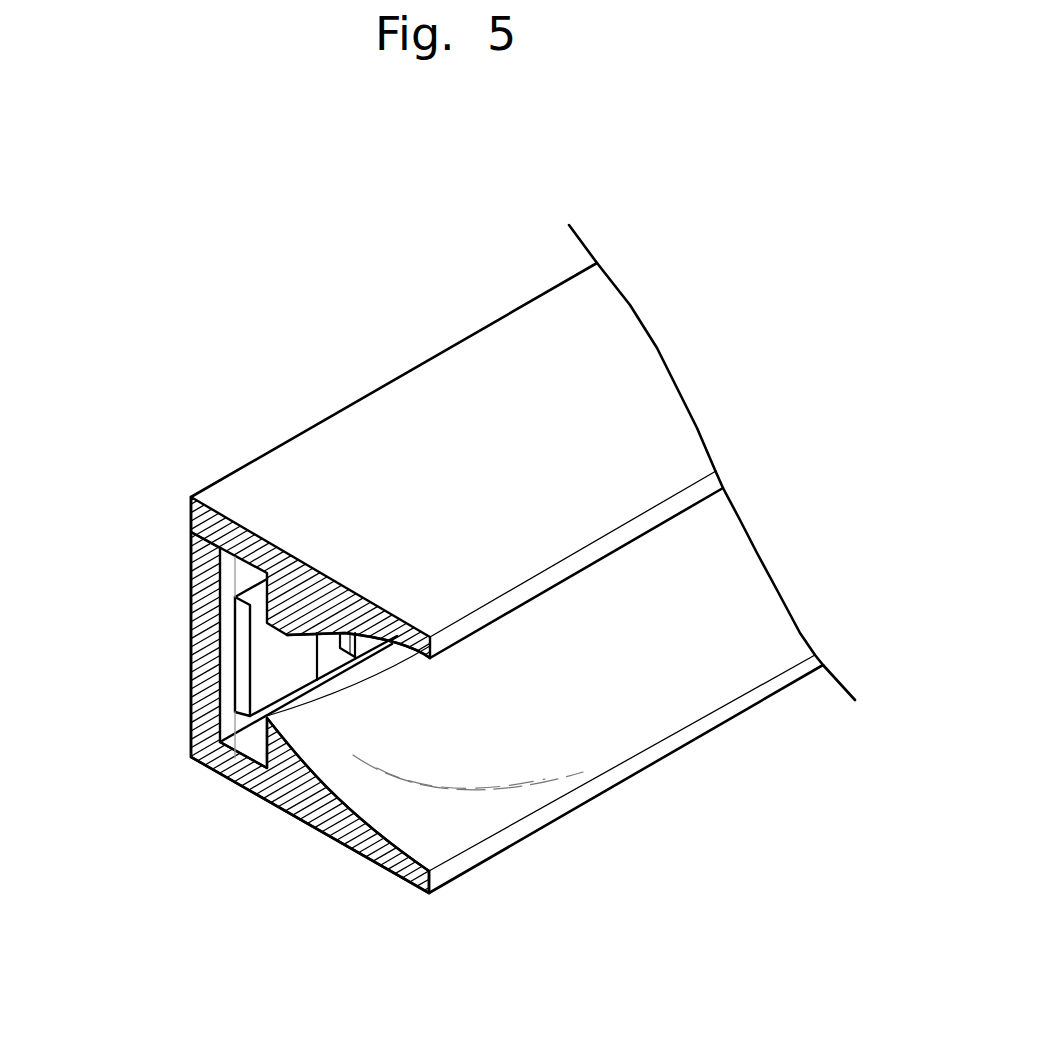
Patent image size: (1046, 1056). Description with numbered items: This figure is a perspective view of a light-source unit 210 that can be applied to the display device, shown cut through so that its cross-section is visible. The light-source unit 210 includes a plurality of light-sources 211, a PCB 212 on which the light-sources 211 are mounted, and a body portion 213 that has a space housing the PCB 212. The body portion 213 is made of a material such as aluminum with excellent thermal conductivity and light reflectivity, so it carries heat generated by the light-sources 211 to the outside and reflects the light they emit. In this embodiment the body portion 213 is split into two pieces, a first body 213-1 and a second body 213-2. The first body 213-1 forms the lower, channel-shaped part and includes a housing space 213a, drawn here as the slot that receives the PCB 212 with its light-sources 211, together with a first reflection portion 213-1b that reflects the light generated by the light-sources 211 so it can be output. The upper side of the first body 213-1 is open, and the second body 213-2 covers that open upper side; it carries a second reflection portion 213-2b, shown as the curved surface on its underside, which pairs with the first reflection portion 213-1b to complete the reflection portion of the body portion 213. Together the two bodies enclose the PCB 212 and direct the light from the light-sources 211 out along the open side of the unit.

The light-source unit 210 is at (608, 174).
The light-source 211 is at (243, 659).
The PCB 212 is at (232, 713).
The body portion 213 is at (78, 503).
The first body 213-1 is at (190, 594).
The second body 213-2 is at (190, 521).
The housing space 213a is at (240, 724).
The reflecting surface 213-1b is at (436, 842).
The lens portion 213-2b is at (374, 619).